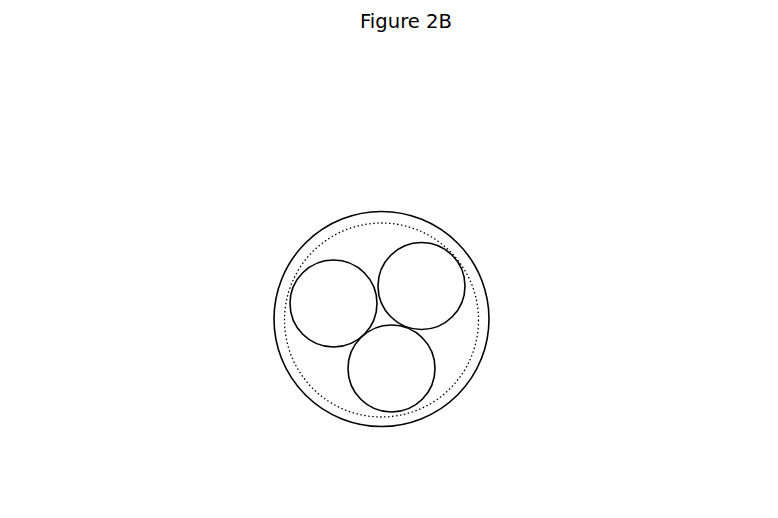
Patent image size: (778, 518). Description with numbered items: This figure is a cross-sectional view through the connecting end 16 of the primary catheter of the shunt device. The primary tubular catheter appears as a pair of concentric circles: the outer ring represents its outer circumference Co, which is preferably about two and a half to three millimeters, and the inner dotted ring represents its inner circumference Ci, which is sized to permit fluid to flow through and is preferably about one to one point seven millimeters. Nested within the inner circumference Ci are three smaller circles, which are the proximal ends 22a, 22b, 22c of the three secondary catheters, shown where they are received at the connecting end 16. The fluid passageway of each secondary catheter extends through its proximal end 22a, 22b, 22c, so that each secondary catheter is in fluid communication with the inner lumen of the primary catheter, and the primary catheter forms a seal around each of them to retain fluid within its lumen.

The connecting end 16 is at (186, 239).
The proximal end 22a is at (293, 327).
The proximal end 22b is at (462, 311).
The proximal end 22c is at (435, 380).
The outer circumference Co is at (332, 222).
The inner circumference Ci is at (428, 234).